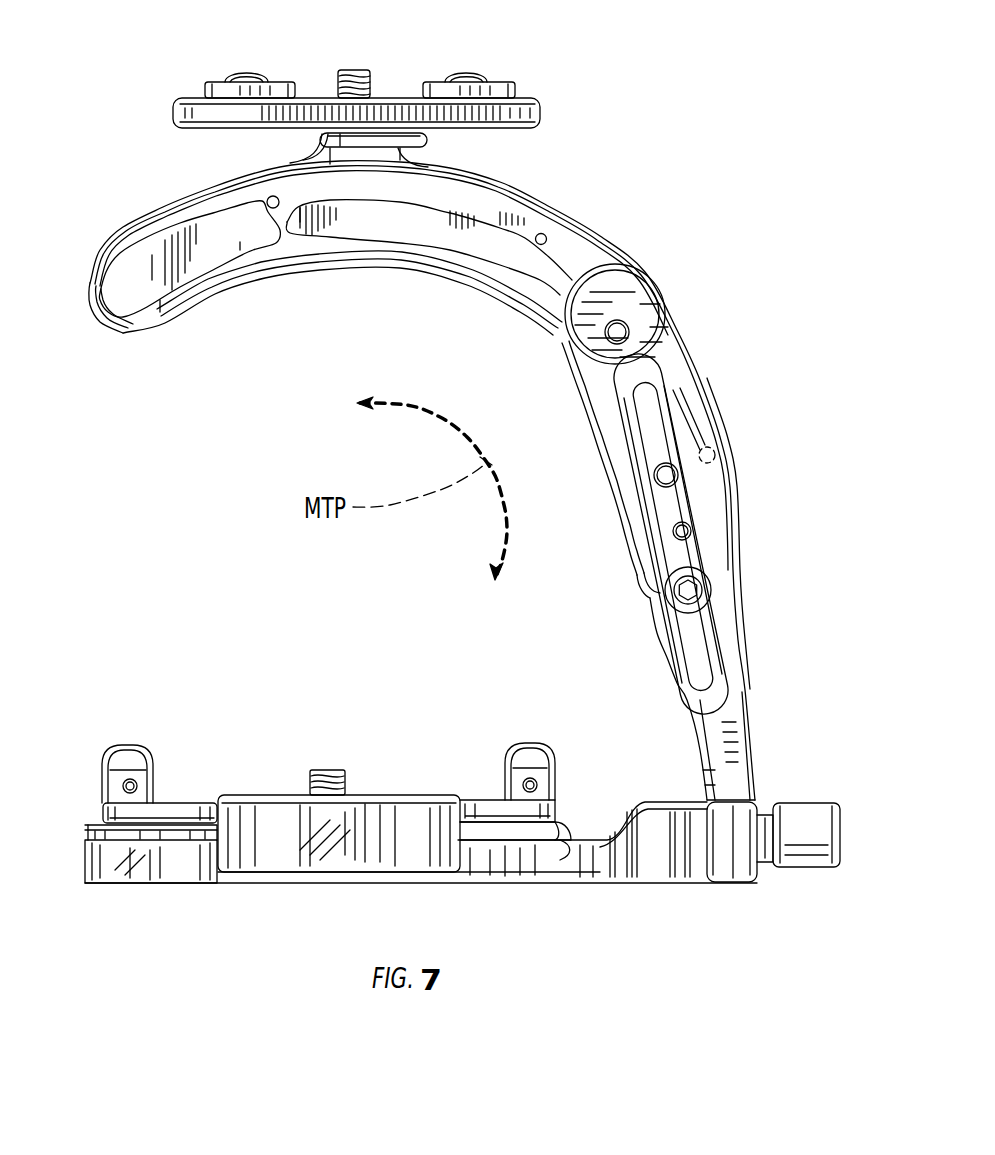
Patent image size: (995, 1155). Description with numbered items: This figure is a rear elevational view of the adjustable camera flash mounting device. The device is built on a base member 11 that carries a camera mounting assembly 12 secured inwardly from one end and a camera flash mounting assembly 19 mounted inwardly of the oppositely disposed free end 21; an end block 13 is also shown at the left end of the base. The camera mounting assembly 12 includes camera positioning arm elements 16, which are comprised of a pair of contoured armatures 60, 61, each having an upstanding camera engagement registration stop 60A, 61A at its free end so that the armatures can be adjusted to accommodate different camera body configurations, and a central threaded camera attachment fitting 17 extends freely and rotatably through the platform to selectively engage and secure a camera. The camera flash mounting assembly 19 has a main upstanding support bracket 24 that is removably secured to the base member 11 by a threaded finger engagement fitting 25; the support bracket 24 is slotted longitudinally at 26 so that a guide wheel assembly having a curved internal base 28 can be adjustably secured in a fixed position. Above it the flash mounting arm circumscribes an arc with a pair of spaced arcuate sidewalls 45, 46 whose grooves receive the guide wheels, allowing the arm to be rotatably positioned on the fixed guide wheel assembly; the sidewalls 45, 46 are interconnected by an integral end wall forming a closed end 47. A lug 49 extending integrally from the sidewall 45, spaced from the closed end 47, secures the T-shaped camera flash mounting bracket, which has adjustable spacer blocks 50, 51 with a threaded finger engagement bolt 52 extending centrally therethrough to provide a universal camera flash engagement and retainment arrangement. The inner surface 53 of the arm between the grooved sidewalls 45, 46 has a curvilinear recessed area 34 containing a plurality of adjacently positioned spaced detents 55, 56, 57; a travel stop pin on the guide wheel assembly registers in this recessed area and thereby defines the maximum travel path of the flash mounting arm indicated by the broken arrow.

The base member 11 is at (570, 868).
The camera mounting assembly 12 is at (280, 793).
The end block 13 is at (85, 868).
The camera positioning arm elements 16 is at (198, 793).
The central threaded camera attachment fitting 17 is at (334, 790).
The camera flash mounting assembly 19 is at (731, 402).
The free end 21 is at (763, 883).
The main upstanding support bracket 24 is at (720, 718).
The threaded finger engagement fitting 25 is at (822, 818).
The longitudinal slot 26 is at (672, 506).
The curved internal base 28 is at (572, 332).
The recess in arm 34 is at (475, 240).
The arcuate sidewall 45 is at (190, 196).
The arcuate sidewall 46 is at (290, 257).
The closed end 47 is at (122, 336).
The lug 49 is at (312, 160).
The adjustable spacer block 50 is at (283, 82).
The adjustable spacer block 51 is at (502, 85).
The threaded finger engagement bolt 52 is at (372, 72).
The inner surface 53 is at (478, 213).
The detent 55 is at (270, 210).
The detent 56 is at (548, 238).
The detent 57 is at (716, 455).
The contoured armature 60 is at (170, 800).
The upstanding camera engagement registration stop 60A is at (112, 757).
The contoured armature 61 is at (496, 792).
The upstanding camera engagement registration stop 61A is at (542, 762).